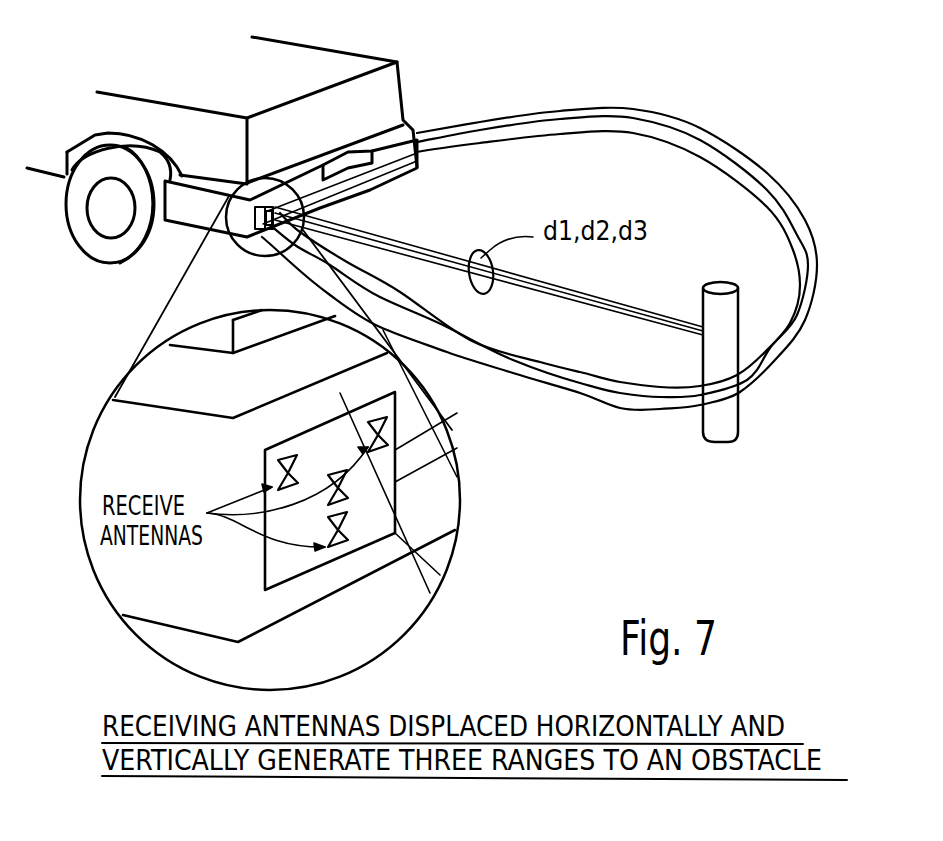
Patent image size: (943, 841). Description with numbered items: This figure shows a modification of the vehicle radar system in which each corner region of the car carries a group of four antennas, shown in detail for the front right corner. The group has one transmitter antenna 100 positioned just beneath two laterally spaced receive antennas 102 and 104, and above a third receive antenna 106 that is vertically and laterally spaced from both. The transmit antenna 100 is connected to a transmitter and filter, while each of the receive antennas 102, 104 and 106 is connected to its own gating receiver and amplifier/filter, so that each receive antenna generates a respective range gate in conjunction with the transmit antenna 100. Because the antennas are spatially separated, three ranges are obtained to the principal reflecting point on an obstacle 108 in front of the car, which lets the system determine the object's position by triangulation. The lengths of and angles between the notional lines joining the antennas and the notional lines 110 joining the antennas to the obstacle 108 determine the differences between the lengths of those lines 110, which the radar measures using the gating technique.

The transmitter antenna 100 is at (350, 491).
The receive antenna 102 is at (272, 470).
The receive antenna 104 is at (363, 425).
The receive antenna 106 is at (338, 550).
The obstacle 108 is at (739, 442).
The notional lines joining the antennas to the obstacle 110 is at (538, 306).